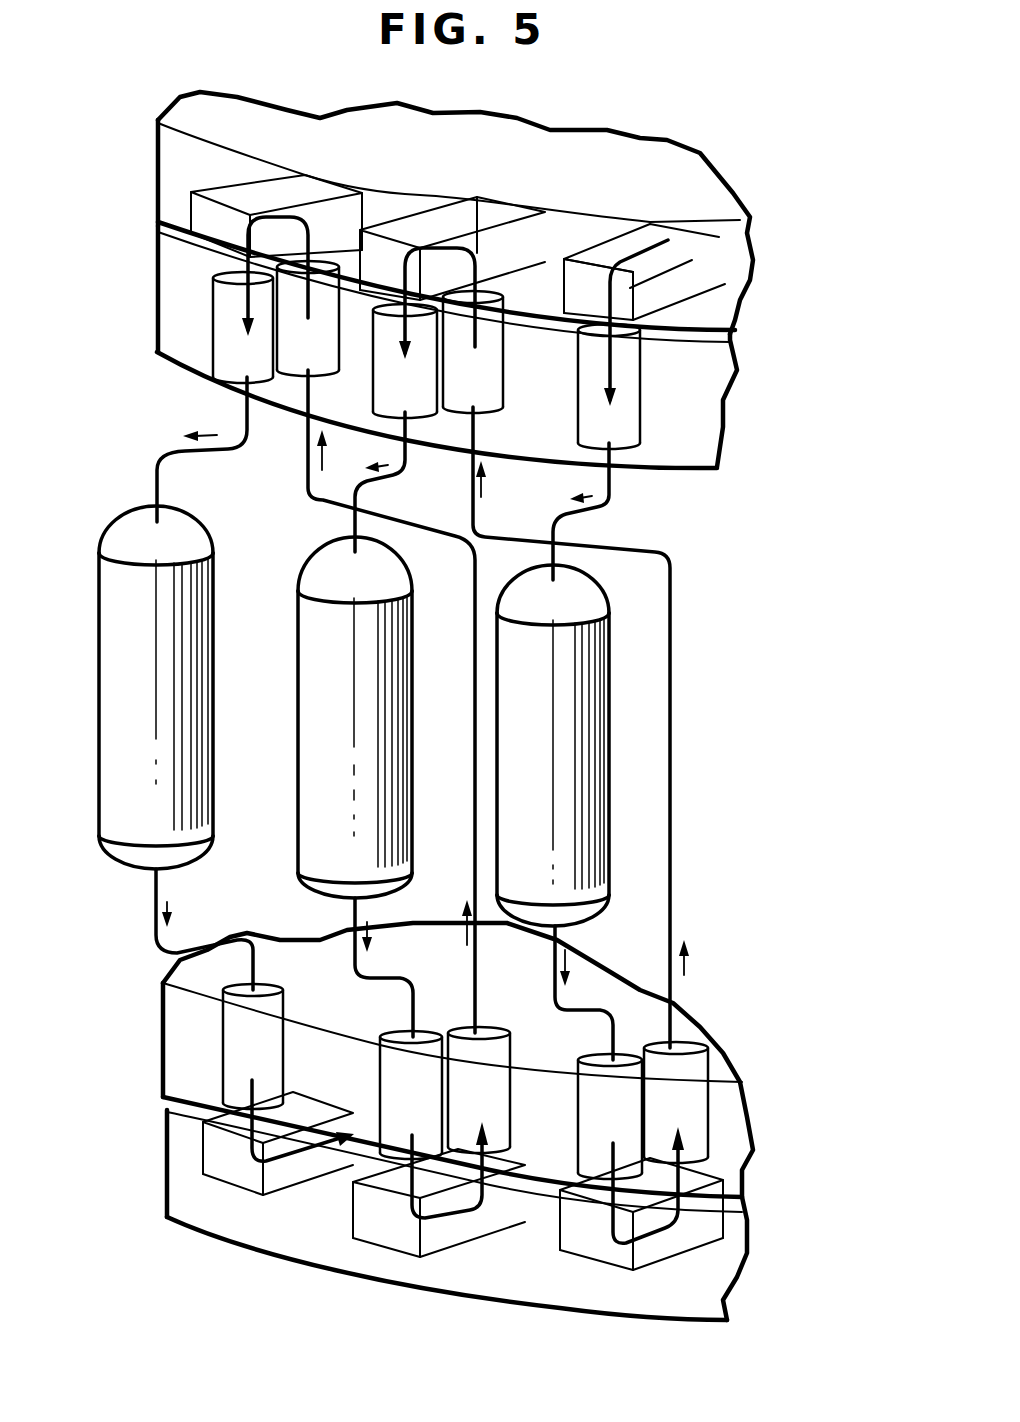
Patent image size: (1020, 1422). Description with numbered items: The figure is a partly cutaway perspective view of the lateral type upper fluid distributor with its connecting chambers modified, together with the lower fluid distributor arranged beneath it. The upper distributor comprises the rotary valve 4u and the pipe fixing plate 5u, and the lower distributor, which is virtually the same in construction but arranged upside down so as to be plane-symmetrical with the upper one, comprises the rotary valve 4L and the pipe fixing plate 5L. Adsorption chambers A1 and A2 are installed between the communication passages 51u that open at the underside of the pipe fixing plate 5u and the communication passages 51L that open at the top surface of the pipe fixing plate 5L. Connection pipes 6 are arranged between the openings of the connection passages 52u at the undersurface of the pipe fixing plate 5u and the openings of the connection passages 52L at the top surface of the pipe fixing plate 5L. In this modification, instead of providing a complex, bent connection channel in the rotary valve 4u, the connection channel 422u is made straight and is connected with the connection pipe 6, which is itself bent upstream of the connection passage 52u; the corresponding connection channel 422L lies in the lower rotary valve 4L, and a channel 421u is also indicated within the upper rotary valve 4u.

The rotary valve 4u is at (160, 162).
The pipe fixing plate 5u is at (160, 295).
The connection channel 422u is at (453, 217).
The upper passage channel 421u is at (690, 290).
The connection passage 52u is at (537, 373).
The communication passage 51u is at (380, 387).
The adsorption chamber A2 is at (312, 727).
The adsorption chamber A1 is at (596, 760).
The connection pipe 6 is at (672, 884).
The pipe fixing plate 5L is at (178, 1042).
The rotary valve 4L is at (178, 1165).
The connection passage 52L is at (703, 1068).
The communication passage 51L is at (590, 1130).
The connection channel 422L is at (680, 1234).